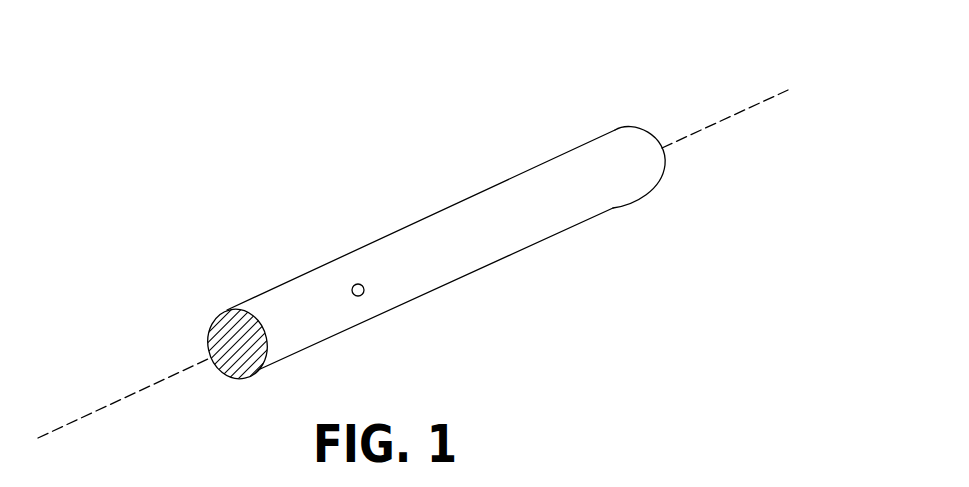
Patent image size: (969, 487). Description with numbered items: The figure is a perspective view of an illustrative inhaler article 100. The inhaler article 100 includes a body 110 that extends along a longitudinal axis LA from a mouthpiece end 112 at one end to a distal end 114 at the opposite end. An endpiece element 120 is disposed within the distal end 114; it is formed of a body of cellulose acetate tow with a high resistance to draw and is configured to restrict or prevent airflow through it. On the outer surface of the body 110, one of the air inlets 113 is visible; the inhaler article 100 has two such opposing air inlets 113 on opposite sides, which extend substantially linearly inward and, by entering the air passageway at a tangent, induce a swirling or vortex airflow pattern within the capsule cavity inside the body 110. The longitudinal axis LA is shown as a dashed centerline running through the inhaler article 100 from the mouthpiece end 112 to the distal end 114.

The inhaler article 100 is at (368, 188).
The body 110 is at (517, 198).
The mouthpiece end 112 is at (625, 115).
The air inlets 113 is at (360, 297).
The distal end 114 is at (242, 392).
The endpiece element 120 is at (232, 322).
The longitudinal axis LA is at (70, 420).